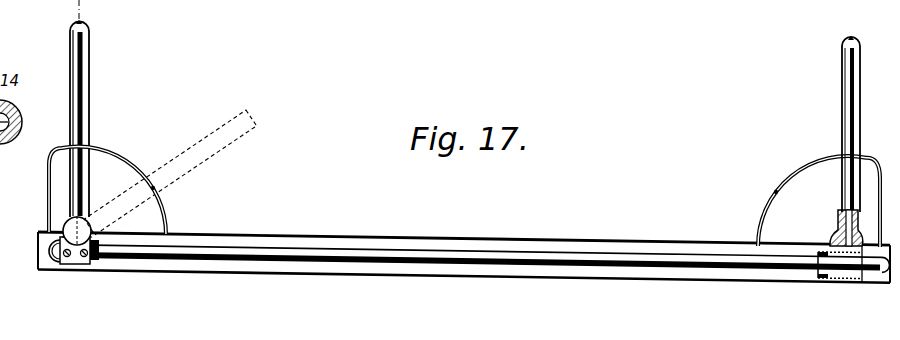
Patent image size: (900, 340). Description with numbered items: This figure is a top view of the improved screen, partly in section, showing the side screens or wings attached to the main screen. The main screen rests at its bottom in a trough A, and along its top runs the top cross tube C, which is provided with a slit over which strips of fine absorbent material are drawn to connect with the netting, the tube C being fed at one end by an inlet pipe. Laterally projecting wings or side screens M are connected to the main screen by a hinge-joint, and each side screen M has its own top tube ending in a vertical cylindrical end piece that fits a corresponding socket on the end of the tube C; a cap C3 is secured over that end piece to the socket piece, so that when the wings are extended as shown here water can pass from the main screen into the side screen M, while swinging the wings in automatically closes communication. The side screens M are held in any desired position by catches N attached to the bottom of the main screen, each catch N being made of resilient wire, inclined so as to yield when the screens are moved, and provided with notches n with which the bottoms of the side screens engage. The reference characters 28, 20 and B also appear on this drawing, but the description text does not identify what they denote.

The trough A is at (464, 252).
The socket housing 28 is at (40, 251).
The pivot ball 20 is at (77, 275).
The catches N is at (464, 194).
The notches n is at (153, 188).
The side screens M is at (862, 99).
The cap C3 is at (861, 249).
The top cross tube C is at (864, 243).
The tube B is at (886, 264).